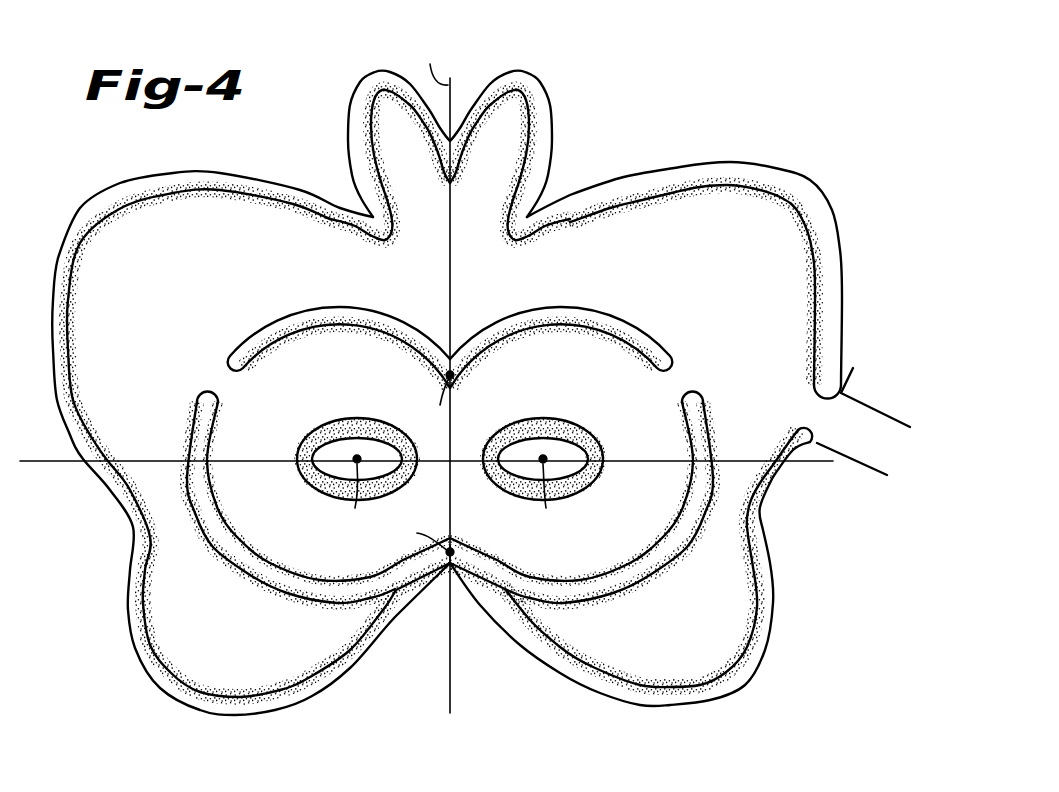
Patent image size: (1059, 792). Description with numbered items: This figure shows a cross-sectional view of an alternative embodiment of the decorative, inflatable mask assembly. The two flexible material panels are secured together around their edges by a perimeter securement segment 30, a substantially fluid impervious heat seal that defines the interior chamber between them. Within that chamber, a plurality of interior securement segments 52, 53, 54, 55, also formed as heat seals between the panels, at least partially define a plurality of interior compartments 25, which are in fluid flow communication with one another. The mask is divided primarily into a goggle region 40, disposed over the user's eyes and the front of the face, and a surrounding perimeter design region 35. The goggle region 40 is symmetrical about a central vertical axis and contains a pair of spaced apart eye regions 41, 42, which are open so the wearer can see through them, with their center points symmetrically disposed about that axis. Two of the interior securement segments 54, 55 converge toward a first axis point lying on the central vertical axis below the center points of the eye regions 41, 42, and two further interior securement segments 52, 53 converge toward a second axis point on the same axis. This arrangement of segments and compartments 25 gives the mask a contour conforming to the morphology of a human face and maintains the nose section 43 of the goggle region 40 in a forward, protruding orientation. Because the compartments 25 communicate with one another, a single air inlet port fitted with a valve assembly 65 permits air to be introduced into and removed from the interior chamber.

The interior compartments 25 is at (395, 125).
The perimeter securement segment 30 is at (222, 178).
The perimeter design region 35 is at (755, 232).
The goggle region 40 is at (507, 380).
The eye region 41 is at (572, 470).
The eye region 42 is at (325, 470).
The nose section 43 is at (451, 520).
The interior securement segment 52 is at (599, 318).
The interior securement segment 53 is at (329, 318).
The interior securement segment 54 is at (298, 590).
The interior securement segment 55 is at (635, 575).
The valve assembly 65 is at (874, 414).